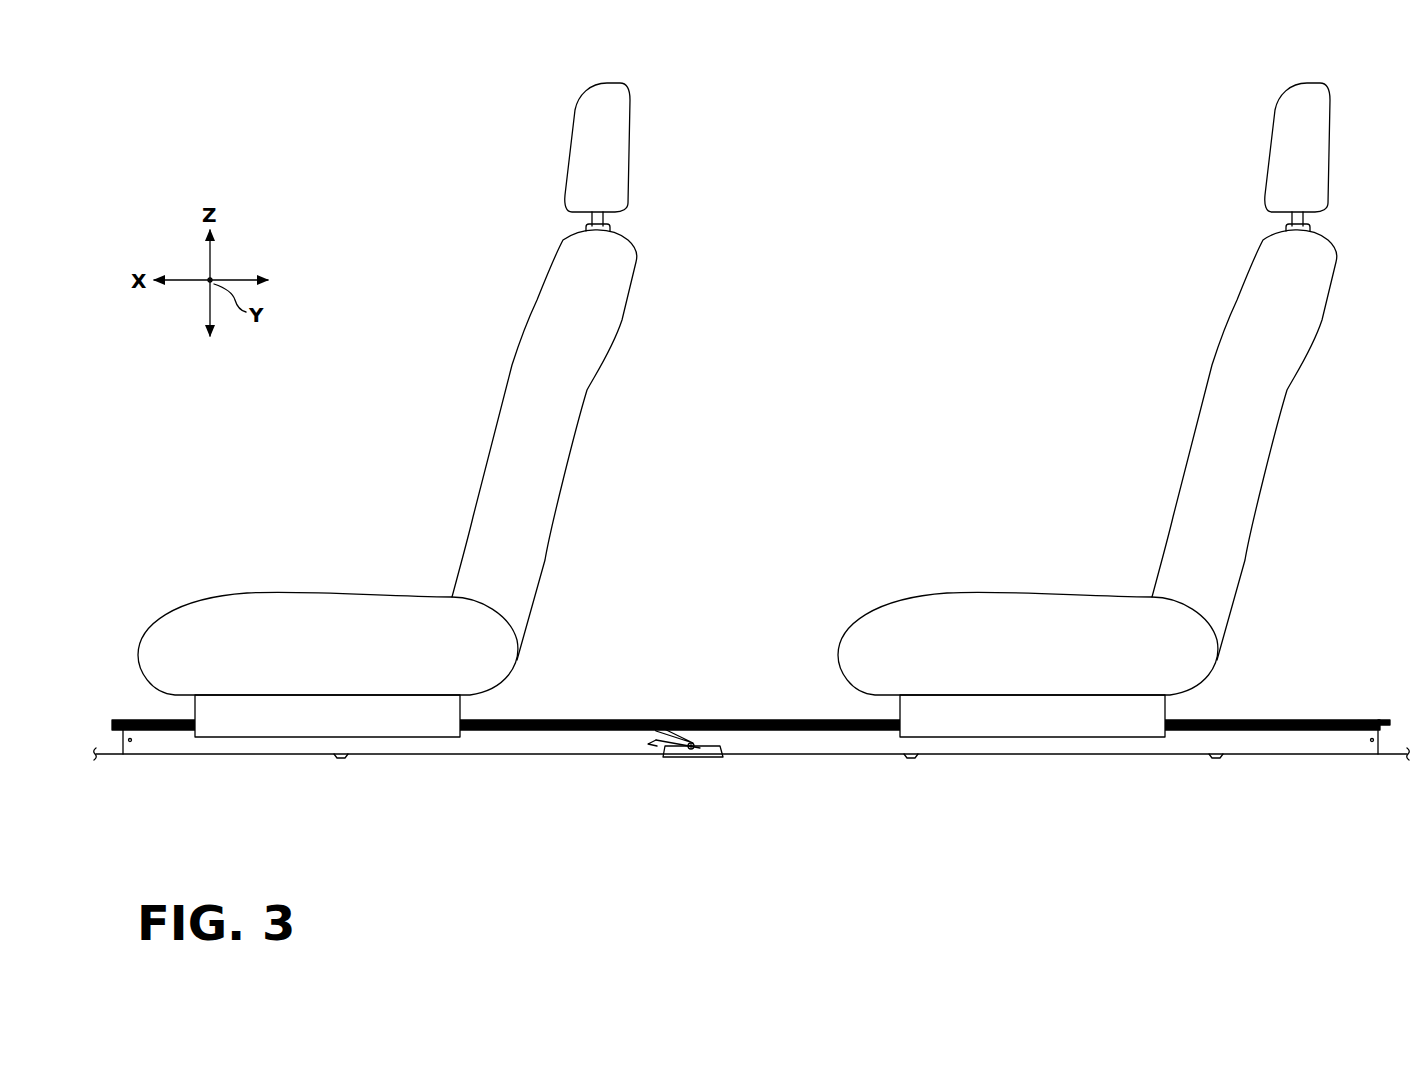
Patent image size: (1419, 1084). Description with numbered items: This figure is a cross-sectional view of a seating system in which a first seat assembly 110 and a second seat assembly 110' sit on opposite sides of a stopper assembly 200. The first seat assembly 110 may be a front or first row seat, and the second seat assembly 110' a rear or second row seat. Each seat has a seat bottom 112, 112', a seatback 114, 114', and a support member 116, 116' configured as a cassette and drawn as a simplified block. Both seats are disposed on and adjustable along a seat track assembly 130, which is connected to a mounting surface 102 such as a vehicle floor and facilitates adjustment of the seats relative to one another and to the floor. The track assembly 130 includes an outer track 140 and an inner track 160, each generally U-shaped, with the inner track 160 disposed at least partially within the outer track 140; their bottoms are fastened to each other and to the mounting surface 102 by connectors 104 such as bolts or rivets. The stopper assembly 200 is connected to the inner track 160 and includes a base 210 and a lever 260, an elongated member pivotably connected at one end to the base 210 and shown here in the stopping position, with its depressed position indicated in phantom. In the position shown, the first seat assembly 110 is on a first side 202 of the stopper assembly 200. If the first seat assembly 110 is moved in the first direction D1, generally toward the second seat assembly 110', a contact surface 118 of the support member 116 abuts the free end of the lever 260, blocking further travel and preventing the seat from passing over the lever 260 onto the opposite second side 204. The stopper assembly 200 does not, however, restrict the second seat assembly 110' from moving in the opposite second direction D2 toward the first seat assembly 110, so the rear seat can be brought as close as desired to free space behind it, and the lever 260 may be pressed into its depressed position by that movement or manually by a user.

The mounting surface 102 is at (103, 757).
The connectors 104 is at (1217, 760).
The first seat assembly 110 is at (565, 143).
The second seat assembly 110' is at (1263, 143).
The seat bottom 112 is at (328, 612).
The seat bottom 112' is at (1028, 612).
The seatback 114 is at (542, 445).
The seatback 114' is at (1241, 445).
The support member 116 is at (319, 761).
The support member 116' is at (1019, 761).
The contact surface 118 is at (463, 735).
The seat track assembly 130 is at (1298, 714).
The outer track 140 is at (1354, 718).
The inner track 160 is at (1340, 740).
The stopper assembly 200 is at (688, 746).
The first side 202 is at (623, 784).
The second side 204 is at (985, 784).
The base 210 is at (706, 745).
The lever 260 is at (664, 720).
The first direction D1 is at (415, 845).
The second direction D2 is at (1037, 846).